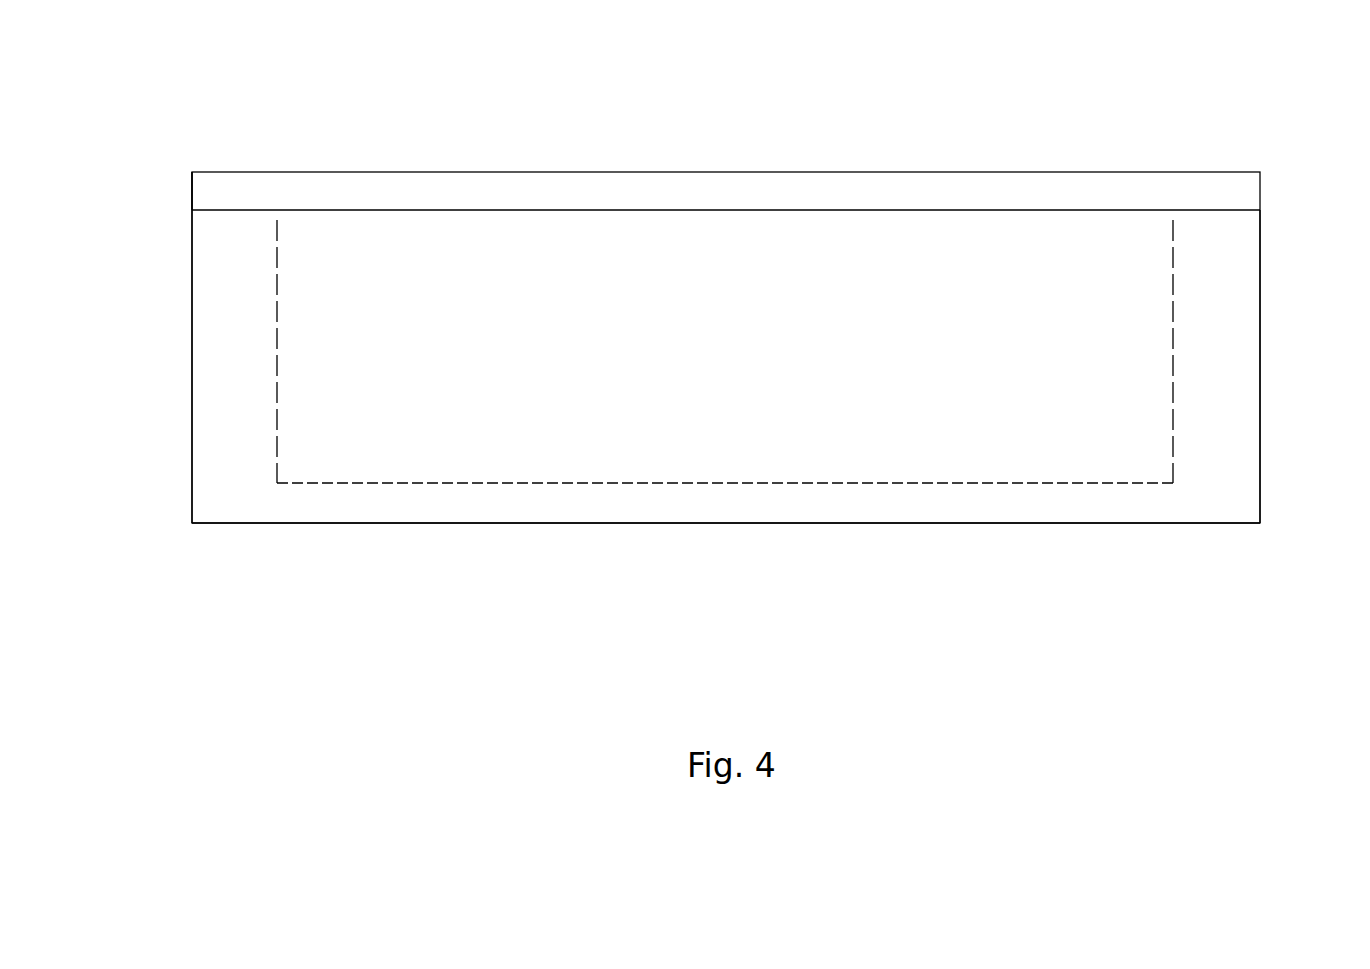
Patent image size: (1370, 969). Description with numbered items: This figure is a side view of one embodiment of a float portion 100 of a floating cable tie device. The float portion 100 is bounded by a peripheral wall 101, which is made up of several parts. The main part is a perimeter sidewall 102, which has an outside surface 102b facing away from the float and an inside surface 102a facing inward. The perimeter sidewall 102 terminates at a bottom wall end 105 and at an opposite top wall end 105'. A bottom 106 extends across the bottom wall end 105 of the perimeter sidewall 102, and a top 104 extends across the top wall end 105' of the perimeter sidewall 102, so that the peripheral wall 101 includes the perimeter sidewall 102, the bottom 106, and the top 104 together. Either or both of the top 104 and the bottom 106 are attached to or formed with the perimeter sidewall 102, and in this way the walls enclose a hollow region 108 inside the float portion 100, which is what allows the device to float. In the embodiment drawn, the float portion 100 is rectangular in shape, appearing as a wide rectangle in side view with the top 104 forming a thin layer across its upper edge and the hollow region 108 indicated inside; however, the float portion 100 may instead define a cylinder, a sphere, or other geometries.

The float portion 100 is at (1073, 106).
The peripheral wall 101 is at (458, 522).
The perimeter sidewall 102 is at (1207, 353).
The inside surface 102a is at (277, 292).
The outside surface 102b is at (192, 415).
The top 104 is at (795, 192).
The bottom wall end 105 is at (1278, 366).
The top wall end 105' is at (153, 172).
The bottom 106 is at (917, 502).
The hollow region 108 is at (718, 380).